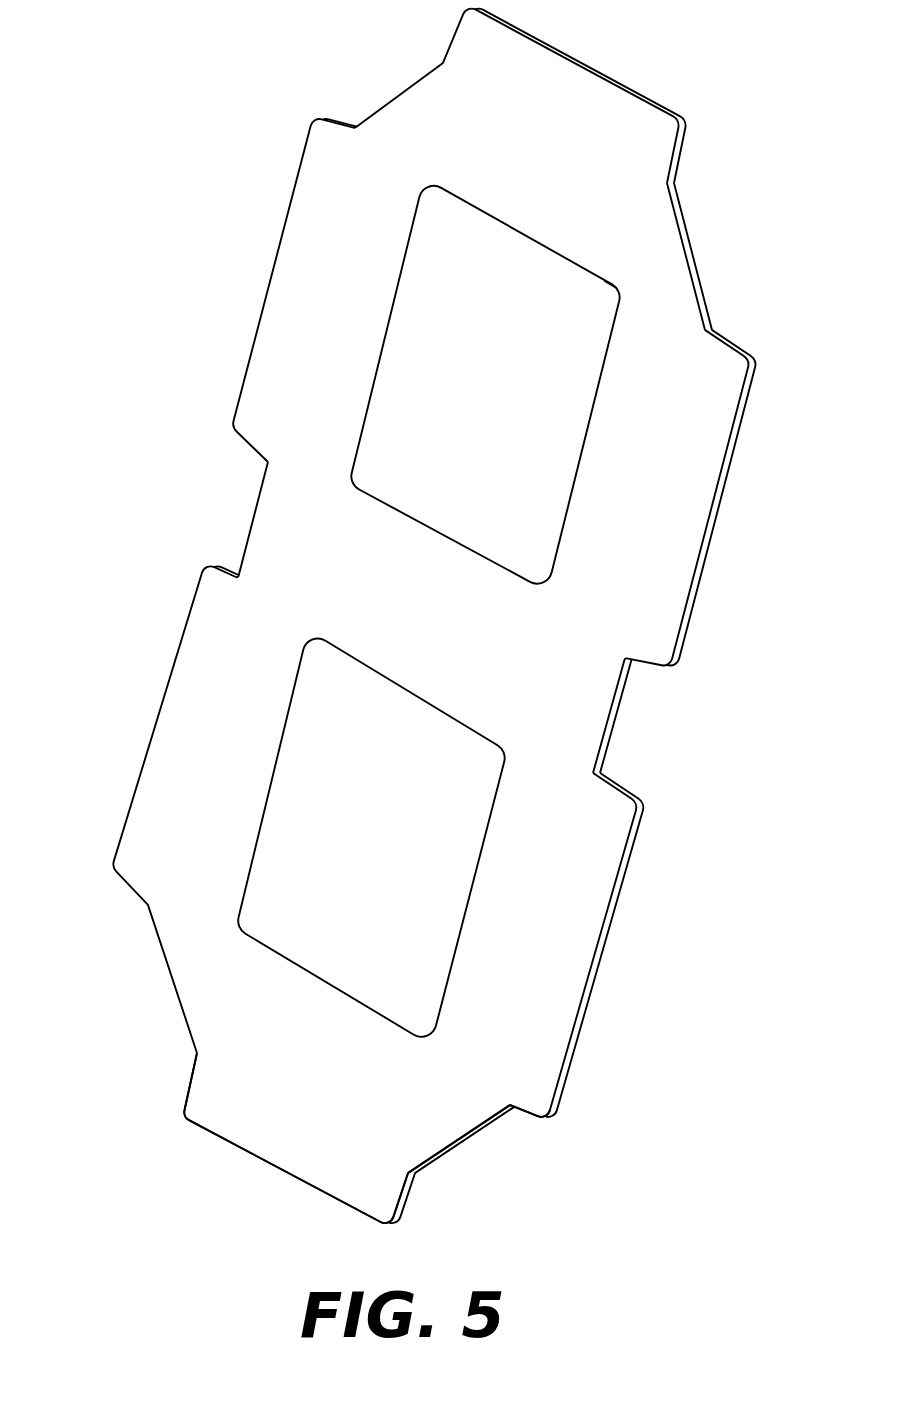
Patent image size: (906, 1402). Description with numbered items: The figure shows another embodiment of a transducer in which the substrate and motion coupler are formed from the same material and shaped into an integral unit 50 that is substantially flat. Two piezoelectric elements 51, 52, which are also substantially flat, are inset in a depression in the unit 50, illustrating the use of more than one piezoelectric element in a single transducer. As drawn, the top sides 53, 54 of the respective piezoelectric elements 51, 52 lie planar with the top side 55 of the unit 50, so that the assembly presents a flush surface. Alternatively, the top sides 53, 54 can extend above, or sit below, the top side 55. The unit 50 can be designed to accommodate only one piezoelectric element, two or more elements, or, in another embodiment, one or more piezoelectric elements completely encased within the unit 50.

The integral unit 50 is at (128, 808).
The piezoelectric element 51 is at (571, 385).
The piezoelectric element 52 is at (453, 838).
The top side 53 is at (487, 486).
The top side 54 is at (370, 954).
The top side 55 is at (343, 1104).